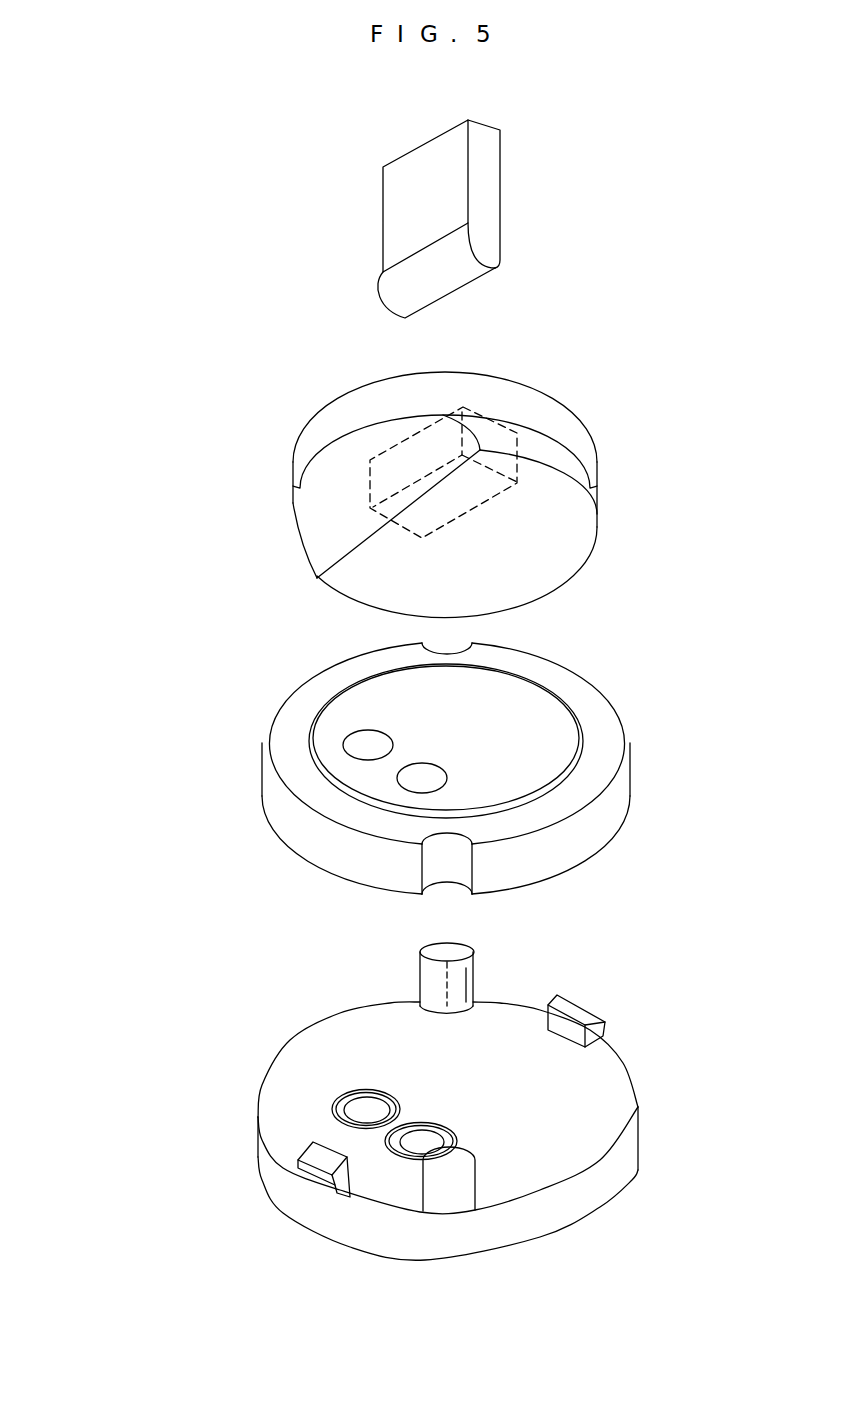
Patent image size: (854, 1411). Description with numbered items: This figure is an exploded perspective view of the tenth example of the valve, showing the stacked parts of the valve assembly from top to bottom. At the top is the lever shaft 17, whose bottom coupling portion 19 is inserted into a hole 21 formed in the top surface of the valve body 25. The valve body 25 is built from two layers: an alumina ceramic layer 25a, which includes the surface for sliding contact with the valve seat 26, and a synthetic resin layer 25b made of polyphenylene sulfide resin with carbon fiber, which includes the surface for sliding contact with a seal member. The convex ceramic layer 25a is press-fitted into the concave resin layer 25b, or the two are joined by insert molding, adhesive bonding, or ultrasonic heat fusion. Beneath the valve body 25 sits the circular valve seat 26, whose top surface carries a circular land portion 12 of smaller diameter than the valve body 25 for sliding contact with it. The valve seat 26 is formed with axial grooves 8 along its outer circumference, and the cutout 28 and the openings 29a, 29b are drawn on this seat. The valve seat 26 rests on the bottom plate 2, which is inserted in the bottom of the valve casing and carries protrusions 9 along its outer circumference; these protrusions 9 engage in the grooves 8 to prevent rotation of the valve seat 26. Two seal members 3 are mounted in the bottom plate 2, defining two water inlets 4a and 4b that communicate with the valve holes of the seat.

The bottom plate 2 is at (267, 1103).
The seal members 3 is at (347, 1097).
The water inlet 4a is at (405, 1155).
The water inlet 4b is at (343, 1107).
The axial grooves 8 is at (458, 860).
The protrusions 9 is at (460, 972).
The circular land portion 12 is at (545, 708).
The lever shaft 17 is at (391, 187).
The bottom coupling portion 19 is at (492, 244).
The hole 21 is at (392, 450).
The valve body 25 is at (602, 458).
The alumina ceramic layer 25a is at (597, 512).
The synthetic resin layer 25b is at (543, 412).
The valve seat 26 is at (267, 803).
The cutout 28 is at (320, 532).
The hole 29a is at (398, 790).
The hole 29b is at (353, 737).